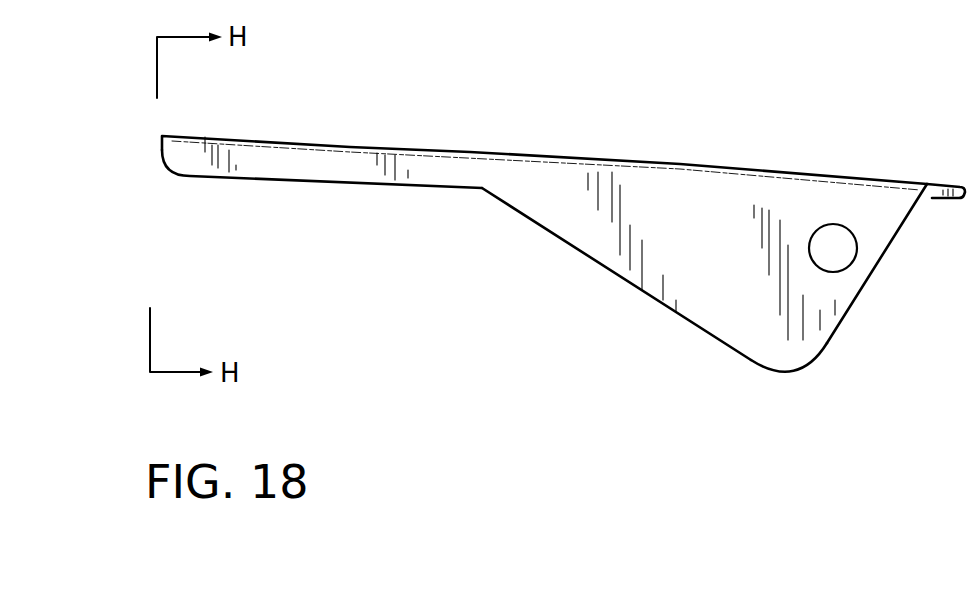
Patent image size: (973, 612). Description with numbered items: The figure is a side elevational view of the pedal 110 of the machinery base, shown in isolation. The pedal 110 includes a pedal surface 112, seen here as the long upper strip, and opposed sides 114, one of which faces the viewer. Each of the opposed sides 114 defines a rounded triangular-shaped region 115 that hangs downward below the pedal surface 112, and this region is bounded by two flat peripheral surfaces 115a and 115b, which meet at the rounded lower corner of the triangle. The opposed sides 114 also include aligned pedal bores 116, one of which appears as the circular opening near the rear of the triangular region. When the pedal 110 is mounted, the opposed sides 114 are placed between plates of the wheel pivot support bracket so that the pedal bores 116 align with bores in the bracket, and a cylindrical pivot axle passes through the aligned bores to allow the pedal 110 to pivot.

The pedal 110 is at (622, 55).
The pedal surface 112 is at (408, 140).
The opposed sides 114 is at (795, 330).
The rounded triangular-shaped region 115 is at (726, 356).
The flat peripheral surface 115a is at (622, 292).
The flat peripheral surface 115b is at (859, 312).
The pedal bore 116 is at (842, 242).